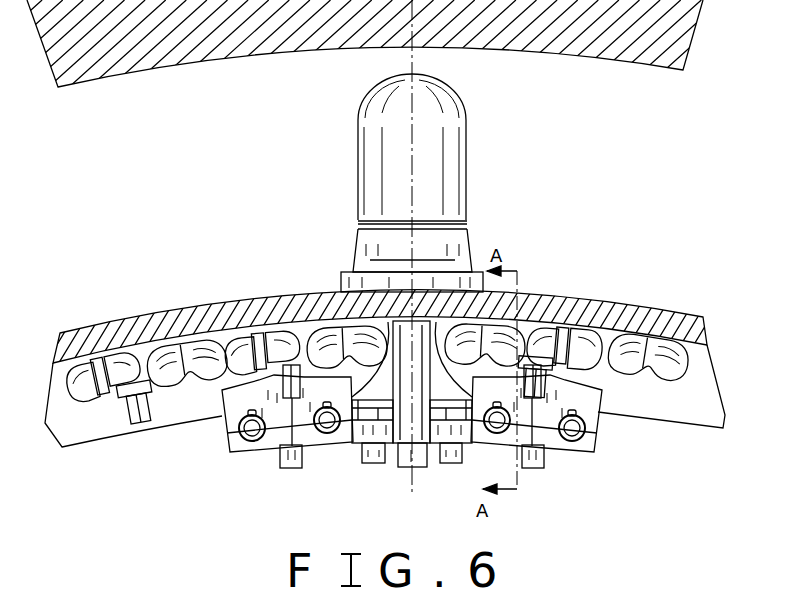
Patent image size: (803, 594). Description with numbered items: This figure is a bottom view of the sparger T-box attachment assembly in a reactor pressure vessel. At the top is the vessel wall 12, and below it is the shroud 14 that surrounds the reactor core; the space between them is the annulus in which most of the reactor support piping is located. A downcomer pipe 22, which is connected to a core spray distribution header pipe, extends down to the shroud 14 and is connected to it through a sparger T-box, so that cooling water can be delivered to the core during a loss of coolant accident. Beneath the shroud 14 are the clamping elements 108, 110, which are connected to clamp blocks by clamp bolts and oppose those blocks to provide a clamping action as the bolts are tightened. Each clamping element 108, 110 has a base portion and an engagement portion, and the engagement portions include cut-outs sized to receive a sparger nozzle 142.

The vessel wall 12 is at (633, 65).
The downcomer pipe 22 is at (467, 178).
The shroud 14 is at (670, 312).
The sparger nozzle 142 is at (550, 332).
The clamping element 108 is at (227, 420).
The clamping element 110 is at (590, 417).